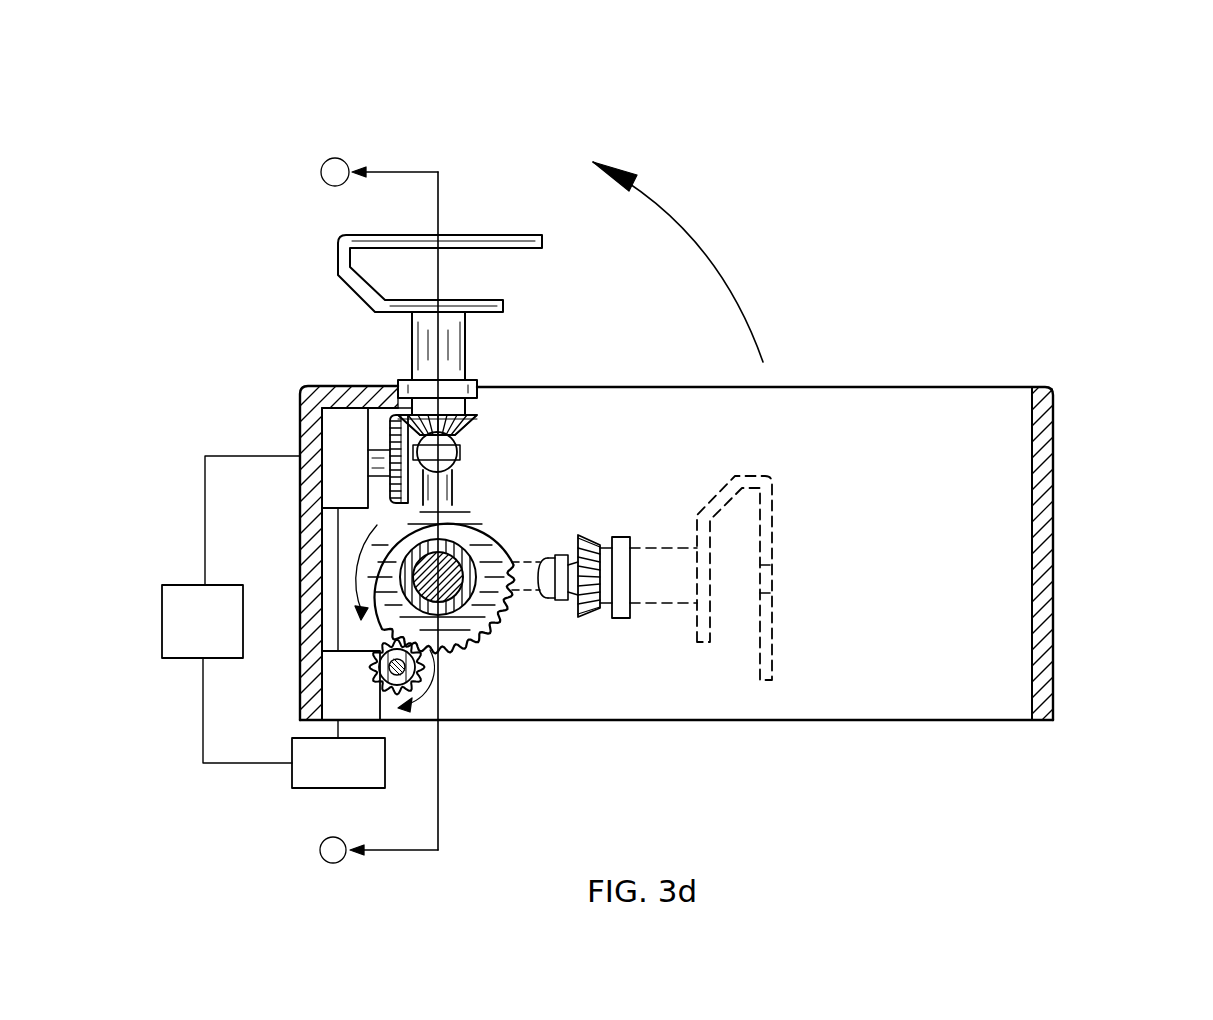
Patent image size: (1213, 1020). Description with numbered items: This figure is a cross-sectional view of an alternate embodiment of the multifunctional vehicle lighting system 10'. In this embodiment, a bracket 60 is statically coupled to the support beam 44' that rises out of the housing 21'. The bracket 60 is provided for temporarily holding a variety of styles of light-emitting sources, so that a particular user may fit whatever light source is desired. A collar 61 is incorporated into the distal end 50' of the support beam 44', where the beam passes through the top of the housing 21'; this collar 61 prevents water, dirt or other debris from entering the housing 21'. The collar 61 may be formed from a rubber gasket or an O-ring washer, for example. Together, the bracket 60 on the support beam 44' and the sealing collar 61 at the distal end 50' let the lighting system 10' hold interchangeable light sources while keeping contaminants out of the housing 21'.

The multifunctional vehicle lighting system 10' is at (606, 457).
The housing 21' is at (606, 522).
The support beam 44' is at (487, 363).
The distal end 50' is at (370, 376).
The bracket 60 is at (467, 243).
The collar 61 is at (480, 390).